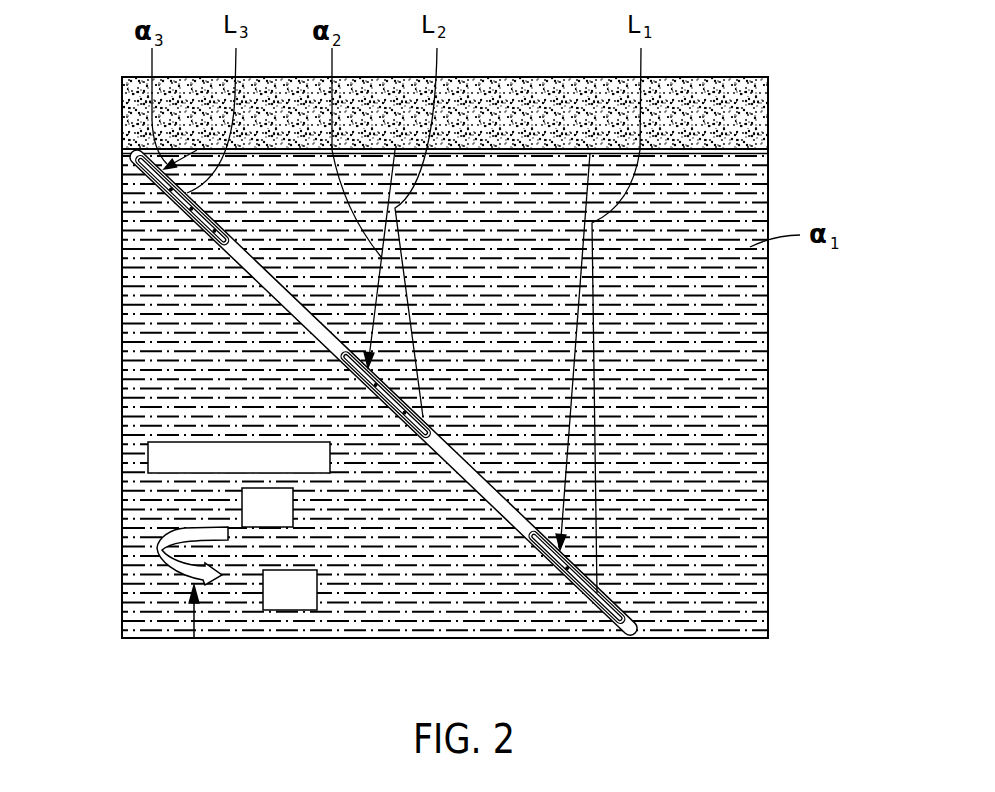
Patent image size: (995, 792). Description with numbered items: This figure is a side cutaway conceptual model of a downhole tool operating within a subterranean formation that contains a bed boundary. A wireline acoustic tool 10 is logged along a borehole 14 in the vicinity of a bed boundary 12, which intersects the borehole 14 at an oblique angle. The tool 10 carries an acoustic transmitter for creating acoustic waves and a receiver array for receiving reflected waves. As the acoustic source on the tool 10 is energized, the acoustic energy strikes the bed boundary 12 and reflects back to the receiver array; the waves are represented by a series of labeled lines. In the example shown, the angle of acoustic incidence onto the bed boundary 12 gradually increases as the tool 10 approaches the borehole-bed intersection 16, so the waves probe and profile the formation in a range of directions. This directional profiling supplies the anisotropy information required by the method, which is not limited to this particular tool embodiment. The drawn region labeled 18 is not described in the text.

The wireline acoustic tool 10 is at (142, 166).
The bed boundary 12 is at (750, 147).
The borehole 14 is at (245, 264).
The borehole-bed intersection 16 is at (149, 150).
The transversely isotropic (TI) formation 18 is at (720, 382).